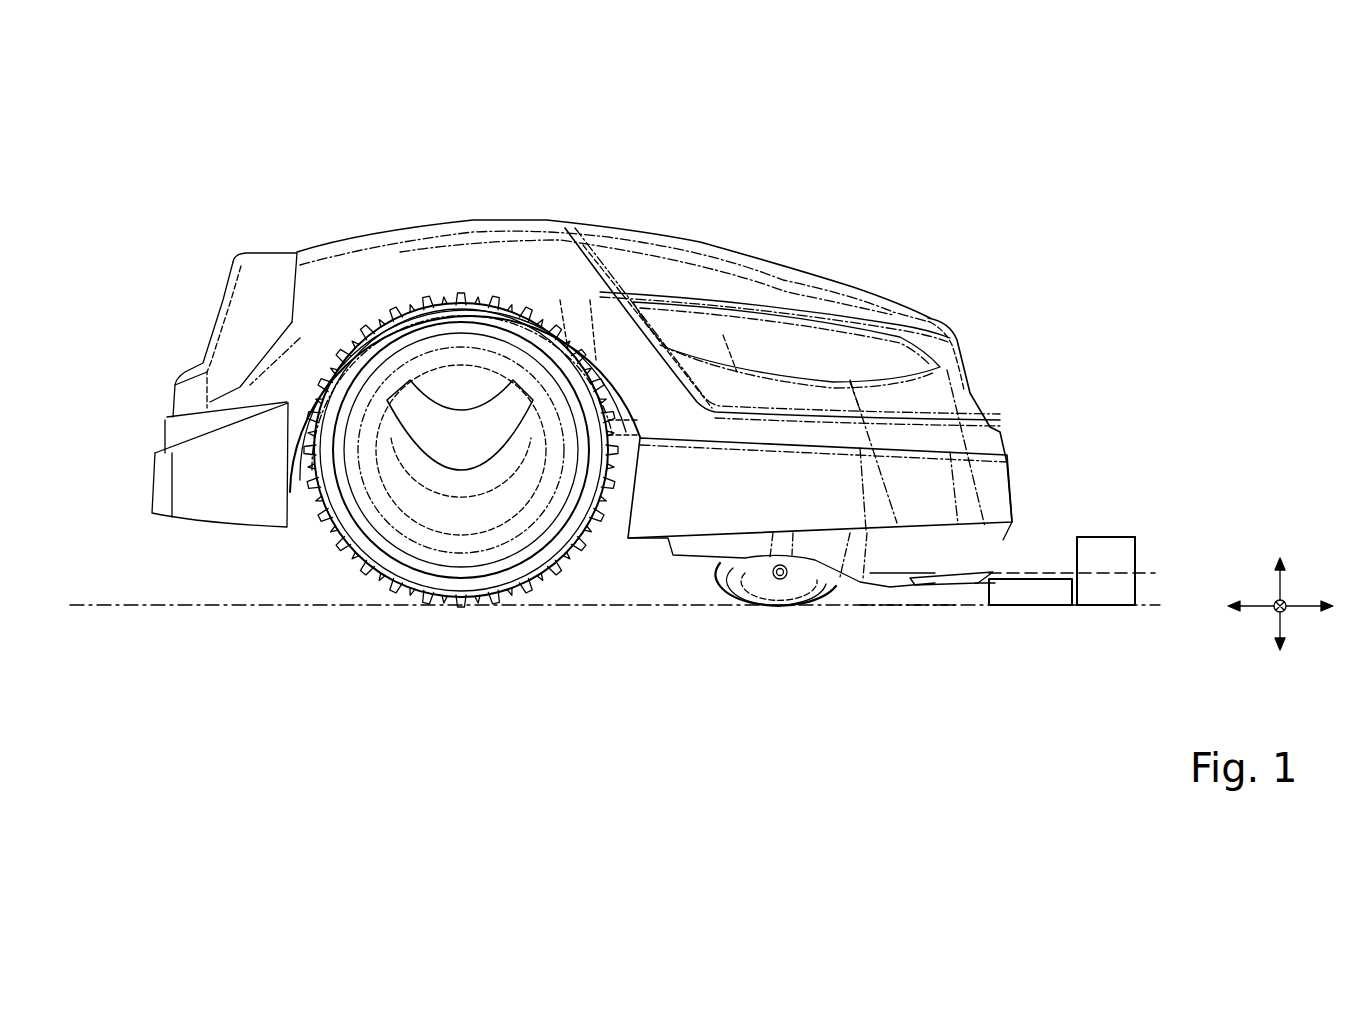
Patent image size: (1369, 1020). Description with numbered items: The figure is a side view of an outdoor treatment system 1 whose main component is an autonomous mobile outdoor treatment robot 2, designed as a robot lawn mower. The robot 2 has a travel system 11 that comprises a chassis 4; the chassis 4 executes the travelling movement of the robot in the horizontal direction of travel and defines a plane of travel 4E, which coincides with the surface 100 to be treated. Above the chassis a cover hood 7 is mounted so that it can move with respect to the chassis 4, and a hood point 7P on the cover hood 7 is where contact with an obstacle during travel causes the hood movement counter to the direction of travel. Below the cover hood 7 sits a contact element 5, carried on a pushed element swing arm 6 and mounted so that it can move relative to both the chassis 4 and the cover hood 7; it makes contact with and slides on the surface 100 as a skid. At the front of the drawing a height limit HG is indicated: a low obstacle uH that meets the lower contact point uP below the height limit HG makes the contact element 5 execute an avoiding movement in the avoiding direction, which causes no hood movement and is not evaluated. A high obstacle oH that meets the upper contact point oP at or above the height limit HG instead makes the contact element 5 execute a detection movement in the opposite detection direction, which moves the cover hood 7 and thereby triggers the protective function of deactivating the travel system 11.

The outdoor treatment system 1 is at (212, 162).
The outdoor treatment robot 2 is at (165, 207).
The chassis 4 is at (441, 588).
The travel system 11 is at (418, 585).
The plane of travel 4E is at (580, 607).
The cover hood 7 is at (1013, 473).
The hood point 7P is at (1013, 520).
The contact element 5 is at (983, 572).
The element swing arm 6 is at (872, 590).
The surface to be treated 100 is at (900, 607).
The upper contact point oP is at (990, 573).
The lower contact point uP is at (983, 578).
The high obstacle oH is at (1080, 537).
The low obstacle uH is at (993, 582).
The height limit HG is at (1137, 573).